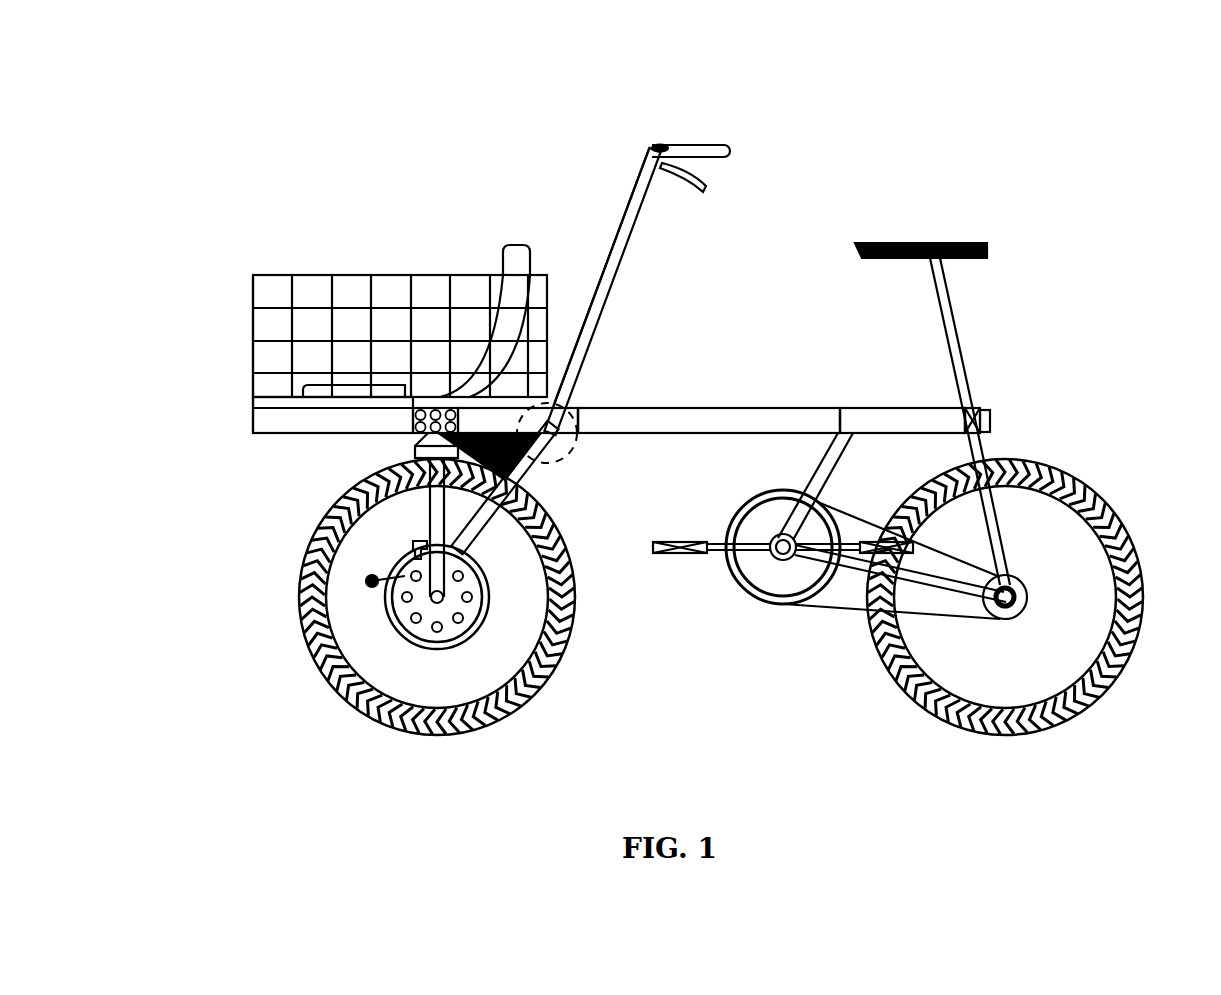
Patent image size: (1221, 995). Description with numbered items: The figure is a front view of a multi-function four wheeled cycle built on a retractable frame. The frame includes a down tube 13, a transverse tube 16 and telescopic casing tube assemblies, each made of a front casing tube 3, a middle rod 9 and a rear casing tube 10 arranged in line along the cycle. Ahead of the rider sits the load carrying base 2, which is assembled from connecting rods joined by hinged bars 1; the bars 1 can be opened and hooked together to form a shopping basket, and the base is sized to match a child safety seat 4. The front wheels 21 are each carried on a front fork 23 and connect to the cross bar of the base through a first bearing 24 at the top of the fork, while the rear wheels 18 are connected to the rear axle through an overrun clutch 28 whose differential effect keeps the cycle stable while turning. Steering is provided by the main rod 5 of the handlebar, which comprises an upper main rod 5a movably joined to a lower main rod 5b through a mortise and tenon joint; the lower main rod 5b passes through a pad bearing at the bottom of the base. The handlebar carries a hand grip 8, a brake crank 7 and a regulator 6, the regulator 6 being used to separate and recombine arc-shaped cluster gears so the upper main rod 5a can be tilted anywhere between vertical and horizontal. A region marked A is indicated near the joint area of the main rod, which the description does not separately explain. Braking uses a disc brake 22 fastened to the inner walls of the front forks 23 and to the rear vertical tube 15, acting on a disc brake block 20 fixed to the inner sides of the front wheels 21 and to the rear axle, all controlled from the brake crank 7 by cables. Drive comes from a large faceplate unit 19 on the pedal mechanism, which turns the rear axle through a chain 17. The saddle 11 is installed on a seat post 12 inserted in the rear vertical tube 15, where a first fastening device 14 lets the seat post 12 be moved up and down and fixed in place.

The hinged bars 1 is at (376, 210).
The load carrying base 2 is at (333, 228).
The front casing tube 3 is at (478, 228).
The child safety seat 4 is at (485, 210).
The main rod of the handlebar 5 is at (592, 229).
The upper main rod 5a is at (630, 277).
The lower main rod 5b is at (566, 615).
The regulator 6 is at (634, 88).
The brake crank 7 is at (674, 108).
The hand grip 8 is at (691, 90).
The middle rod 9 is at (709, 228).
The rear casing tube 10 is at (871, 228).
The saddle 11 is at (921, 141).
The seat post 12 is at (1068, 307).
The down tube 13 is at (1077, 413).
The first fastening device 14 is at (1086, 361).
The rear vertical tube 15 is at (1090, 392).
The transverse tube 16 is at (997, 504).
The chain 17 is at (994, 608).
The rear wheels 18 is at (1027, 634).
The large faceplate unit 19 is at (861, 655).
The disc brake block 20 is at (499, 677).
The front wheels 21 is at (437, 632).
The disc brake 22 is at (264, 563).
The front fork 23 is at (280, 456).
The first bearing 24 is at (281, 401).
The overrun clutch 28 is at (1093, 603).
The joint detail A is at (688, 614).